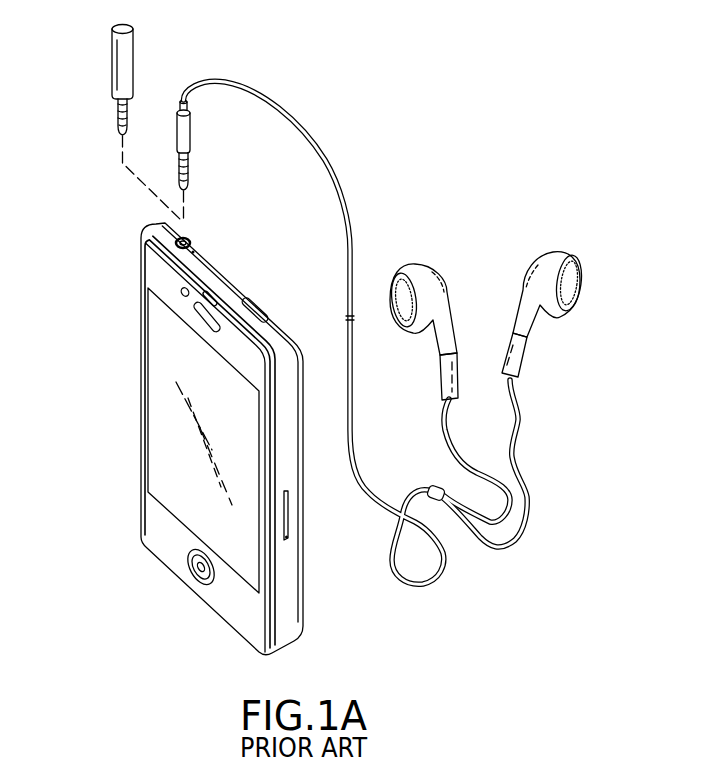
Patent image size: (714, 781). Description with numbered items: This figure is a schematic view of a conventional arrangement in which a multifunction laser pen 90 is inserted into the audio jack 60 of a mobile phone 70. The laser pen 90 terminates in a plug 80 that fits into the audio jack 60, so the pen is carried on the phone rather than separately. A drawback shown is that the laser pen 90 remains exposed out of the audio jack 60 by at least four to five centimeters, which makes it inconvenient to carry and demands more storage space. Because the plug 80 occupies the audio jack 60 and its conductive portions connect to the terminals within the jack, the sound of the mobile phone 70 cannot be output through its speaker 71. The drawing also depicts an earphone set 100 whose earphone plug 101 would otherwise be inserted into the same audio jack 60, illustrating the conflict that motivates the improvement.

The audio jack 60 is at (190, 240).
The mobile phone 70 is at (143, 419).
The speaker 71 is at (203, 320).
The plug 80 is at (118, 113).
The multifunction laser pen 90 is at (113, 55).
The earphones 100 is at (478, 273).
The earphone plug 101 is at (190, 160).